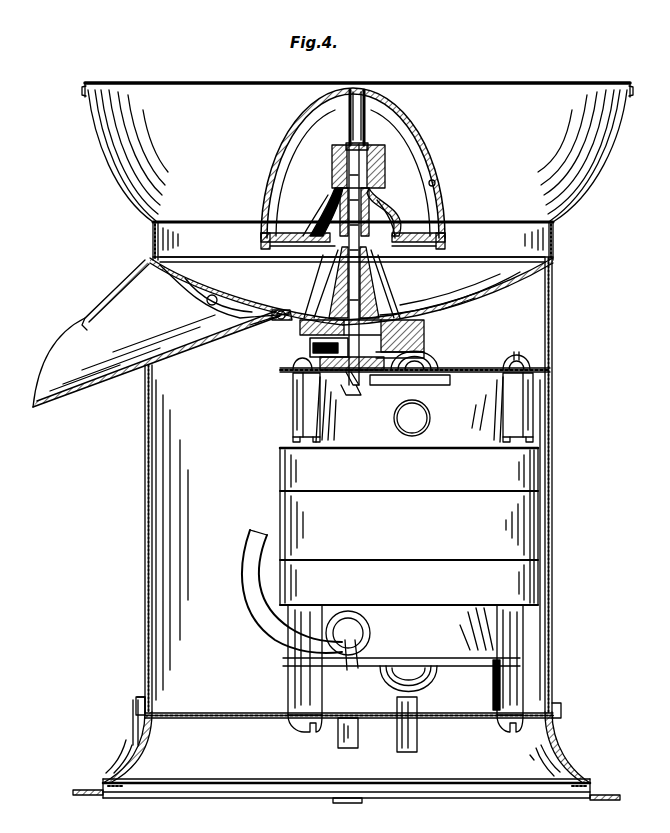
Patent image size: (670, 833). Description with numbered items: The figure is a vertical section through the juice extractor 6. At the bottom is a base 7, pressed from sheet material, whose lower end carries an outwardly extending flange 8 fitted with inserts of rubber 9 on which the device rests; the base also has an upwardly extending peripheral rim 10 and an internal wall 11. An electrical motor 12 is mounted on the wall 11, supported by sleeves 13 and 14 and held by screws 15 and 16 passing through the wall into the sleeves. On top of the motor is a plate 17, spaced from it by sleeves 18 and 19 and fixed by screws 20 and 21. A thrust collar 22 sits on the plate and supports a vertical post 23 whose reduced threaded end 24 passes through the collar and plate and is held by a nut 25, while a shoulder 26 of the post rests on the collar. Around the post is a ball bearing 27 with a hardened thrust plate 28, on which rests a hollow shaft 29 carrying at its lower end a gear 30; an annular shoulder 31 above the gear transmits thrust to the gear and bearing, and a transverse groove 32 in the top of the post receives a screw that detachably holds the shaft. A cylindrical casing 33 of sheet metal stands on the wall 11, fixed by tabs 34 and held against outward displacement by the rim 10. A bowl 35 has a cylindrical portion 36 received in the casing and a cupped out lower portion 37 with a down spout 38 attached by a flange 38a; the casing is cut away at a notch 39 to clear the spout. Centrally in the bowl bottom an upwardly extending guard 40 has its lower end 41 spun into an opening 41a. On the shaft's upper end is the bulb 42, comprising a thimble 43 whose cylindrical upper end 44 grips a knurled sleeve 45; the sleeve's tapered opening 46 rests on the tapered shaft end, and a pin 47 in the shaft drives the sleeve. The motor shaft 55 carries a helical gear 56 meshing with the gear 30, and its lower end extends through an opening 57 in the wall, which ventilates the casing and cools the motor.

The juice extractor 6 is at (560, 505).
The base 7 is at (565, 748).
The outwardly extending flange 8 is at (603, 795).
The inserts of rubber 9 is at (348, 803).
The peripheral rim 10 is at (559, 712).
The internal wall 11 is at (468, 713).
The electrical motor 12 is at (295, 502).
The sleeve 13 is at (300, 678).
The sleeve 14 is at (500, 678).
The screw 15 is at (293, 723).
The screw 16 is at (498, 723).
The plate 17 is at (484, 368).
The sleeve 18 is at (303, 405).
The sleeve 19 is at (518, 396).
The screw 20 is at (295, 363).
The screw 21 is at (530, 362).
The thrust collar 22 is at (372, 380).
The vertical stud or post 23 is at (361, 263).
The reduced and threaded end 24 is at (366, 388).
The nut 25 is at (341, 372).
The shoulder 26 is at (310, 343).
The ball bearing 27 is at (431, 360).
The thrust plate 28 is at (424, 334).
The shaft 29 is at (376, 285).
The gear 30 is at (430, 314).
The annular shoulder 31 is at (321, 302).
The transverse groove 32 is at (339, 270).
The cylindrical casing 33 is at (382, 226).
The tabs 34 is at (150, 736).
The bowl 35 is at (580, 183).
The cylindrical portion 36 is at (553, 241).
The cupped out lower portion 37 is at (550, 270).
The down spout 38 is at (58, 360).
The flange 38a is at (188, 283).
The notch 39 is at (146, 372).
The guard 40 is at (300, 274).
The lower end of guard 41 is at (280, 322).
The opening 41a is at (482, 276).
The bulb 42 is at (430, 168).
The thimble 43 is at (386, 210).
The cylindrical upper end 44 is at (332, 165).
The sleeve 45 is at (340, 183).
The tapered opening 46 is at (352, 146).
The pin 47 is at (327, 203).
The motor shaft 55 is at (396, 753).
The helical gear 56 is at (431, 345).
The opening 57 is at (430, 722).